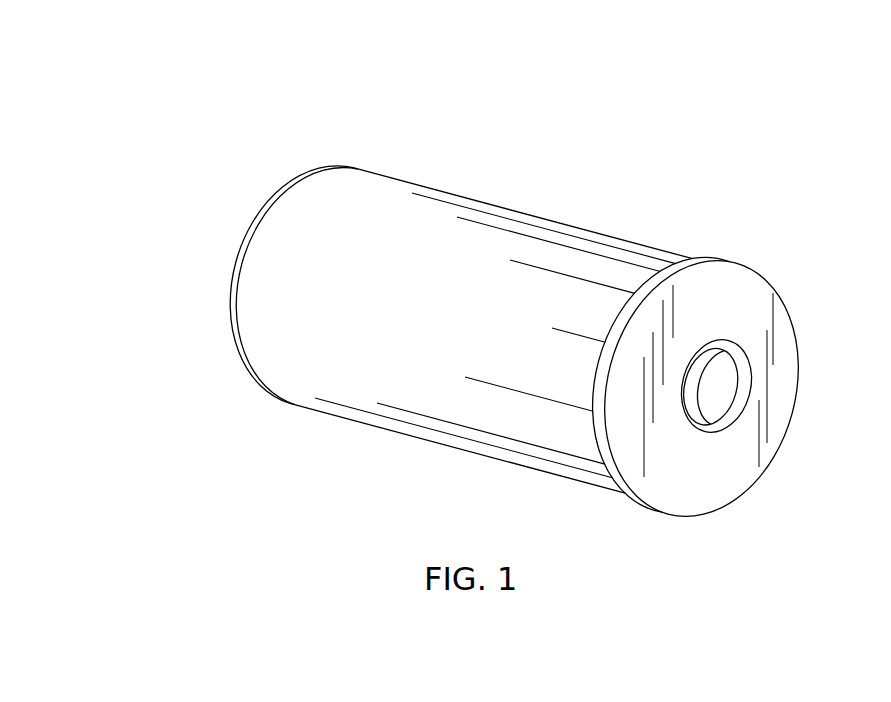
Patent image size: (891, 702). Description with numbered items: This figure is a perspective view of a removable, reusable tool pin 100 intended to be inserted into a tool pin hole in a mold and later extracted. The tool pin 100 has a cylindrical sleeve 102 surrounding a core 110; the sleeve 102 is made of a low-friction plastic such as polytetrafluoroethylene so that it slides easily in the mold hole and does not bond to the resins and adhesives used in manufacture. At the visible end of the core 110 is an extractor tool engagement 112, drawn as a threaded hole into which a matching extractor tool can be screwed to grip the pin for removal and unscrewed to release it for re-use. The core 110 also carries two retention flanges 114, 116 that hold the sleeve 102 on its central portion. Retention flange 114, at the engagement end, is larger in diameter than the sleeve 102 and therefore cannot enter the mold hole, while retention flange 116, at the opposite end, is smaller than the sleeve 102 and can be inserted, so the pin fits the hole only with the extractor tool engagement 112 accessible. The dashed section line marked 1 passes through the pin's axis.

The tool pin 100 is at (282, 103).
The sleeve 102 is at (440, 211).
The core 110 is at (755, 357).
The extractor tool engagement 112 is at (745, 388).
The retention flange 114 is at (753, 284).
The retention flange 116 is at (243, 362).
The section line 1 is at (167, 248).